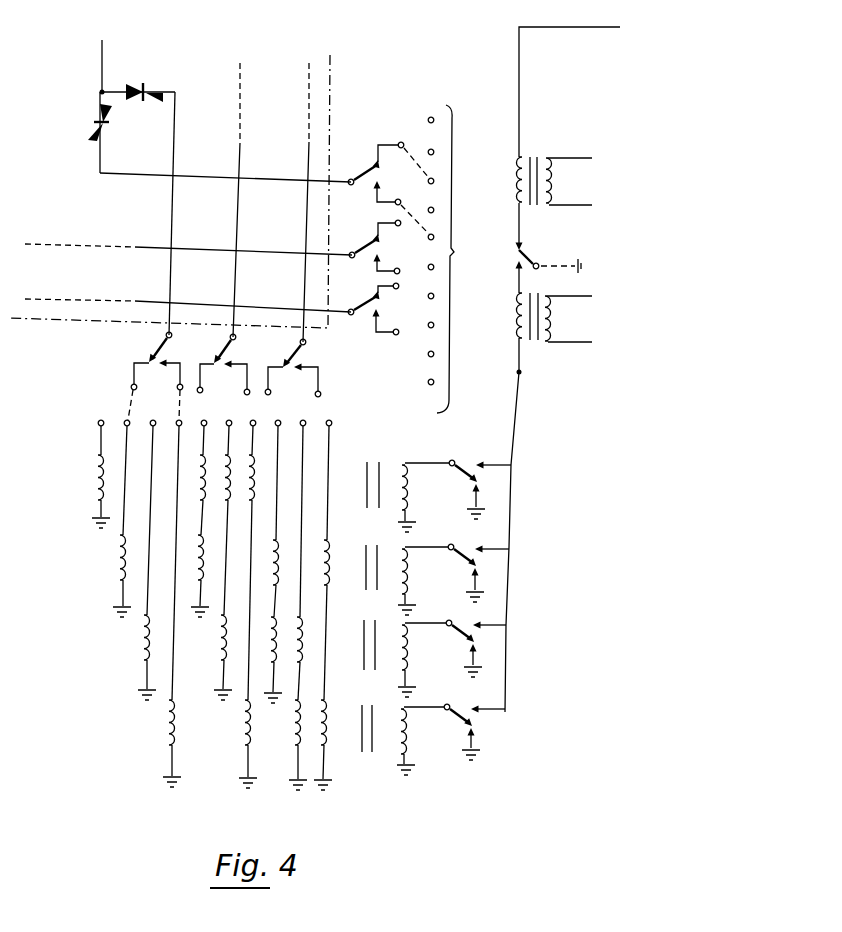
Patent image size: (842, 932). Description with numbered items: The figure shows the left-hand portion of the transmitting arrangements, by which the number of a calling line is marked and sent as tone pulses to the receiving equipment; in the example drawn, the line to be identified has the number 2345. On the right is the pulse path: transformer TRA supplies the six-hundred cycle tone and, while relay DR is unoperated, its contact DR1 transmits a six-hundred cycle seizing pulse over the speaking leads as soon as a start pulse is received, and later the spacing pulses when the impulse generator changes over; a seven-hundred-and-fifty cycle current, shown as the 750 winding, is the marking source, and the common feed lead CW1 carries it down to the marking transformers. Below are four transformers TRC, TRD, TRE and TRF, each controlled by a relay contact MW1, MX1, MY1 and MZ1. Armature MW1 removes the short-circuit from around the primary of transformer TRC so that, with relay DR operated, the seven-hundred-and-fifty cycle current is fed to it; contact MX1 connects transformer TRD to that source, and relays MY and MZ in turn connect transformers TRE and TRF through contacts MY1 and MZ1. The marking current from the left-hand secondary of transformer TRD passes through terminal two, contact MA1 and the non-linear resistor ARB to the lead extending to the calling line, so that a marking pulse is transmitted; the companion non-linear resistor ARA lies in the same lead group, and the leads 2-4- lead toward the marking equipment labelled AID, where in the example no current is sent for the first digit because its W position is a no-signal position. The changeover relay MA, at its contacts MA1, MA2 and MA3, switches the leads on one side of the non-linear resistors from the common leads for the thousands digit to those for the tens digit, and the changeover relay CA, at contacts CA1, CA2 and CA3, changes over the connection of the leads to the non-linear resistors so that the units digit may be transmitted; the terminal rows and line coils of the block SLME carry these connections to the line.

The number of the line to be identified 2345 is at (102, 58).
The non-linear resistor ARB is at (138, 81).
The non-linear resistor ARA is at (96, 122).
The AID unit AID is at (80, 246).
The lead 2-4- is at (173, 292).
The contact of changeover relay CA CA1 is at (381, 188).
The contact of changeover relay CA CA2 is at (366, 247).
The contact of changeover relay CA CA3 is at (365, 309).
The transformer TRA is at (562, 170).
The contact of relay DR DR1 is at (549, 248).
The 750 c./s. current 750 is at (559, 317).
The CW1-CZ1 connection CW1 is at (519, 372).
The transformer TRC is at (402, 487).
The transformer TRD is at (398, 570).
The transformer TRE is at (398, 649).
The transformer TRF is at (396, 731).
The armature of relay MW MW1 is at (479, 481).
The contact of relay MX MX1 is at (478, 564).
The contact of relay MY MY1 is at (475, 639).
The contact of relay MZ MZ1 is at (474, 724).
The contact of changeover relay MA MA1 is at (151, 376).
The contact of changeover relay MA MA2 is at (220, 364).
The contact of changeover relay MA MA3 is at (289, 368).
The SLME unit SLME is at (63, 508).